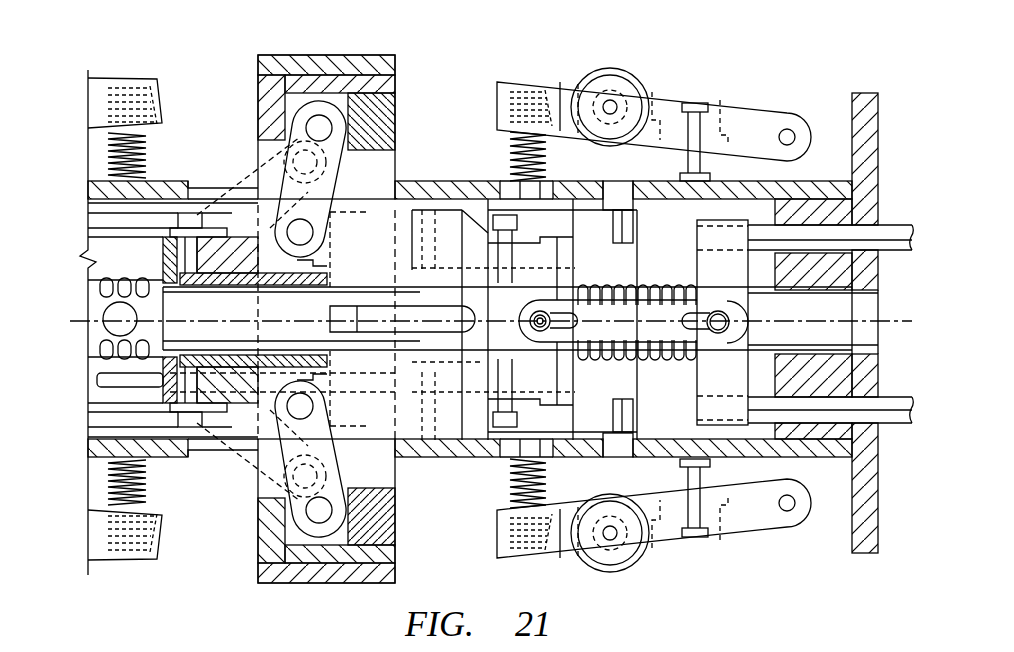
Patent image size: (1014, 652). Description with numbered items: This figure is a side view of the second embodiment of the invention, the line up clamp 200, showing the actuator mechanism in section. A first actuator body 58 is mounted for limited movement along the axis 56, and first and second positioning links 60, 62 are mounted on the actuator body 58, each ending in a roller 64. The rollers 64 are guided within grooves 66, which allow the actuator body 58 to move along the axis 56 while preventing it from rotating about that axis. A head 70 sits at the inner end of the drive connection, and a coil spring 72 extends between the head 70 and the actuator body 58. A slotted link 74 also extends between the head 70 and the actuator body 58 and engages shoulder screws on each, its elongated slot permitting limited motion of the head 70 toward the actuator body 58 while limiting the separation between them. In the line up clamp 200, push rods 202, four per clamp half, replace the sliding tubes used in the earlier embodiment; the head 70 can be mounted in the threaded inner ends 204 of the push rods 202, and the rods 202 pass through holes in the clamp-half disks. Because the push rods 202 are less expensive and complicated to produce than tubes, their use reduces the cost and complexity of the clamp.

The axis 56 is at (897, 323).
The first actuator body 58 is at (468, 225).
The first positioning link 60 is at (563, 222).
The second positioning link 62 is at (563, 420).
The roller 64 is at (616, 178).
The grooves 66 is at (643, 195).
The head 70 is at (738, 281).
The coil spring 72 is at (588, 367).
The slotted link 74 is at (746, 320).
The line up clamp 200 is at (777, 85).
The push rods 202 is at (896, 226).
The threaded inner ends 204 is at (700, 242).